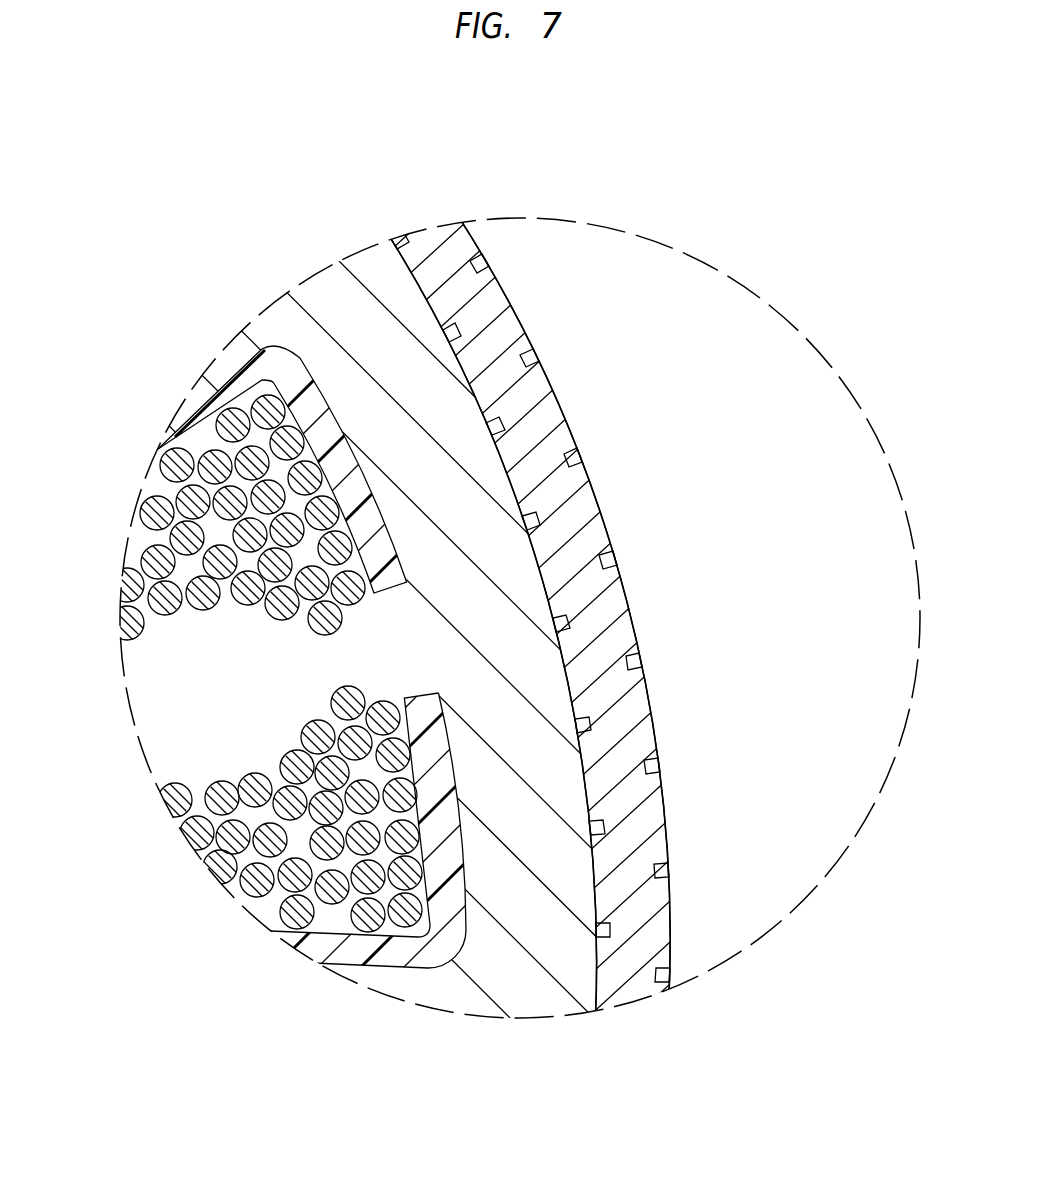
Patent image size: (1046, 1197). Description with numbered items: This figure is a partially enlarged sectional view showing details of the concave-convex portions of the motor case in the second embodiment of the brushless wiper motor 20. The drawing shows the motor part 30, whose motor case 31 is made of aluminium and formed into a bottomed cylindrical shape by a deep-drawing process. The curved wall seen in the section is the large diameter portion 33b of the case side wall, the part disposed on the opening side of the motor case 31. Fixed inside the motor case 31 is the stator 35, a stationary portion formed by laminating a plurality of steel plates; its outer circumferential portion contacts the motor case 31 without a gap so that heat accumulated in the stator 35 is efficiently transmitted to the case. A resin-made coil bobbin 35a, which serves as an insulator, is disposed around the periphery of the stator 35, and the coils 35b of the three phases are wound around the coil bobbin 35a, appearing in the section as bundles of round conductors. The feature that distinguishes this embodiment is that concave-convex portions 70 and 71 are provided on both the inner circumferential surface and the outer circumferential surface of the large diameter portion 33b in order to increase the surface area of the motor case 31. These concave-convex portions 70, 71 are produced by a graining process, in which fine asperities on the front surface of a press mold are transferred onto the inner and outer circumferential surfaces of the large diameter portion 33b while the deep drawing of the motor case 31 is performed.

The brushless wiper motor 20 is at (572, 243).
The motor part 30 is at (681, 846).
The motor case 31 is at (549, 378).
The large diameter portion 33b is at (553, 500).
The stator 35 is at (378, 347).
The coil bobbin 35a is at (270, 370).
The coils 35b is at (148, 505).
The concave-convex portion 70 is at (580, 826).
The concave-convex portion 71 is at (660, 663).